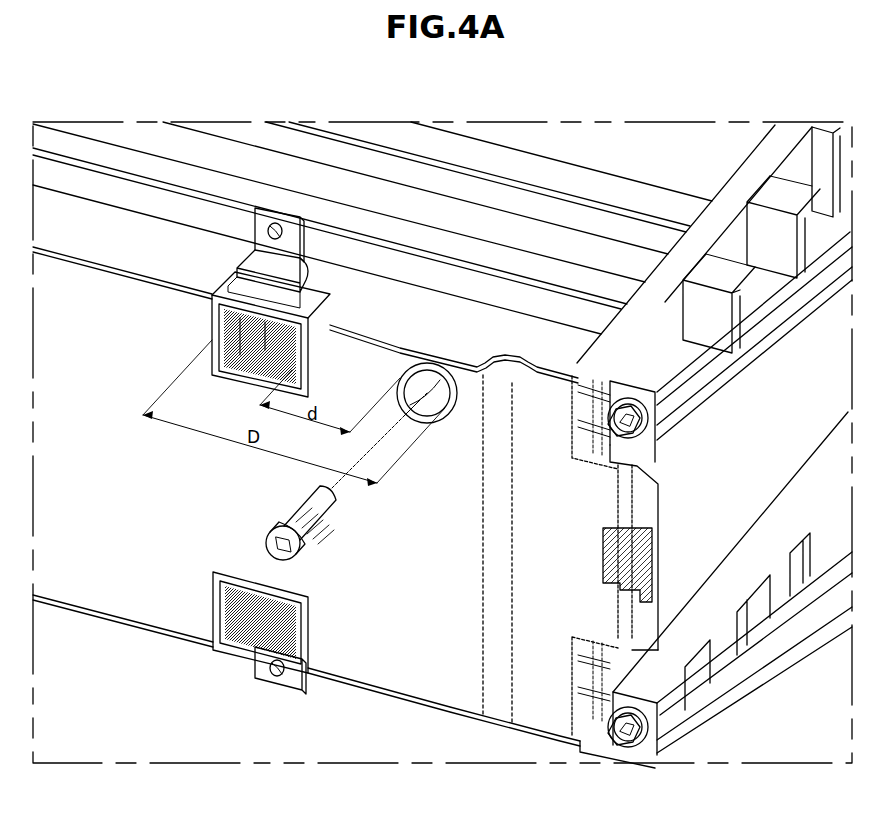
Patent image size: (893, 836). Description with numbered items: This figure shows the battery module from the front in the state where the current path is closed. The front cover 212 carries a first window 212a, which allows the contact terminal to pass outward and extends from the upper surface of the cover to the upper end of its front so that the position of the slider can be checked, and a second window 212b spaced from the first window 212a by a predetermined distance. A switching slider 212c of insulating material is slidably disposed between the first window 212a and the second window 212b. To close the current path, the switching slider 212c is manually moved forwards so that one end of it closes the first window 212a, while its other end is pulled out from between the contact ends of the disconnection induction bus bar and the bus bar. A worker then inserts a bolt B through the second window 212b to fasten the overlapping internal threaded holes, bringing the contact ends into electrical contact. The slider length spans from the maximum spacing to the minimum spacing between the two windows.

The front cover 212 is at (140, 568).
The first window 212a is at (213, 338).
The second window 212b is at (428, 424).
The switching slider 212c is at (236, 270).
The bolt B is at (298, 511).